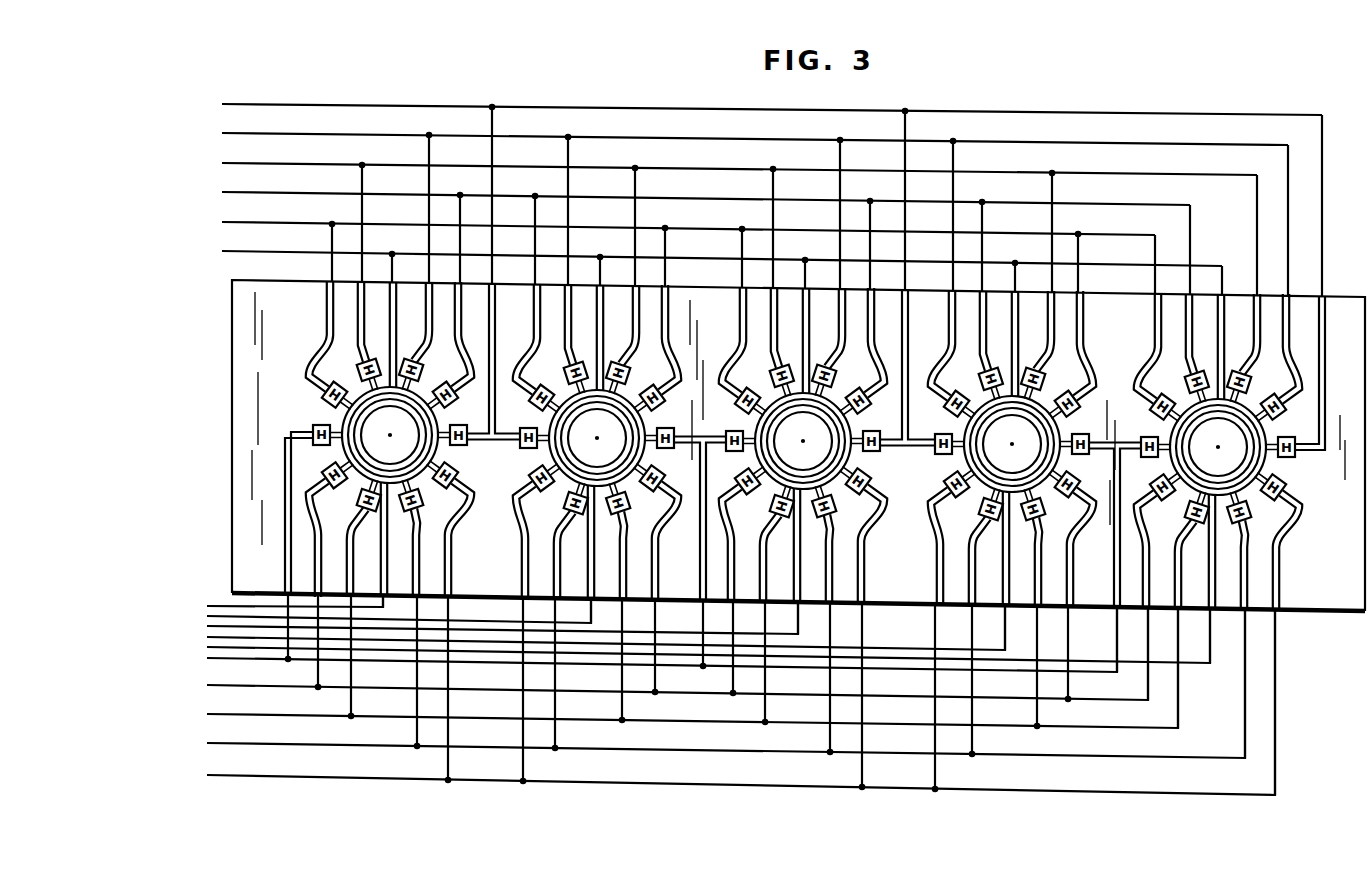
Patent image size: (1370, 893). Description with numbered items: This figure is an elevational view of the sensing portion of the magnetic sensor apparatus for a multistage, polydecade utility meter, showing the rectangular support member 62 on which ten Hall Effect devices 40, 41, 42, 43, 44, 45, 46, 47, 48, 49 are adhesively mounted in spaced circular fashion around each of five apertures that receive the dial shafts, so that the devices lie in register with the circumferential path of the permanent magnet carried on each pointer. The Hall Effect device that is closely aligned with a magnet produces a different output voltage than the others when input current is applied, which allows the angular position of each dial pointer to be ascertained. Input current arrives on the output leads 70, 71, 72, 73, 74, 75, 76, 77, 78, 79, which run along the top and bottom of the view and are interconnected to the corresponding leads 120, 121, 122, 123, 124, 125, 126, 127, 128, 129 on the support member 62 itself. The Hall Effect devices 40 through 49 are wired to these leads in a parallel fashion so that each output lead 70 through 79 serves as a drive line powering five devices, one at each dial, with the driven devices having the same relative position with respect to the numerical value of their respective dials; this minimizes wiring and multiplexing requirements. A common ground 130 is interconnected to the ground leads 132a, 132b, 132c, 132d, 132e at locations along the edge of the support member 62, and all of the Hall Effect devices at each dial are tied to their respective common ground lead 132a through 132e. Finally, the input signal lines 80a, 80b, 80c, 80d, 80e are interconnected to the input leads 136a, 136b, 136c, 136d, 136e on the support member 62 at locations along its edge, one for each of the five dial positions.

The output lead 72 is at (296, 104).
The output lead 70 is at (286, 133).
The output lead 79 is at (268, 163).
The output lead 71 is at (258, 192).
The output lead 78 is at (250, 222).
The common ground 130 is at (244, 251).
The rectangular support member 62 is at (1335, 298).
The lead 125 is at (1195, 613).
The Hall Effect device 40 is at (427, 370).
The Hall Effect device 41 is at (456, 403).
The Hall Effect device 42 is at (468, 447).
The Hall Effect device 43 is at (460, 474).
The Hall Effect device 44 is at (425, 507).
The Hall Effect device 45 is at (374, 517).
The Hall Effect device 46 is at (340, 495).
The Hall Effect device 47 is at (295, 427).
The Hall Effect device 48 is at (315, 398).
The Hall Effect device 49 is at (357, 368).
The ground lead 132a is at (400, 292).
The ground lead 132b is at (605, 295).
The ground lead 132c is at (810, 297).
The ground lead 132d is at (1020, 300).
The ground lead 132e is at (1227, 300).
The input lead 136a is at (387, 563).
The input lead 136b is at (590, 568).
The input lead 136c is at (808, 568).
The input lead 136d is at (1003, 580).
The input lead 136e is at (1215, 587).
The input signal line 80a is at (246, 605).
The input signal line 80b is at (212, 616).
The input signal line 80c is at (225, 636).
The input signal line 80d is at (235, 645).
The input signal line 80e is at (230, 660).
The output lead 73 is at (322, 775).
The output lead 74 is at (270, 745).
The output lead 75 is at (272, 714).
The output lead 76 is at (270, 685).
The output lead 77 is at (274, 656).
The lead 120 is at (1258, 322).
The lead 121 is at (1290, 350).
The lead 122 is at (1318, 410).
The lead 123 is at (1288, 535).
The lead 124 is at (1255, 556).
The lead 126 is at (1148, 583).
The lead 127 is at (1115, 528).
The lead 128 is at (1154, 344).
The lead 129 is at (1154, 320).